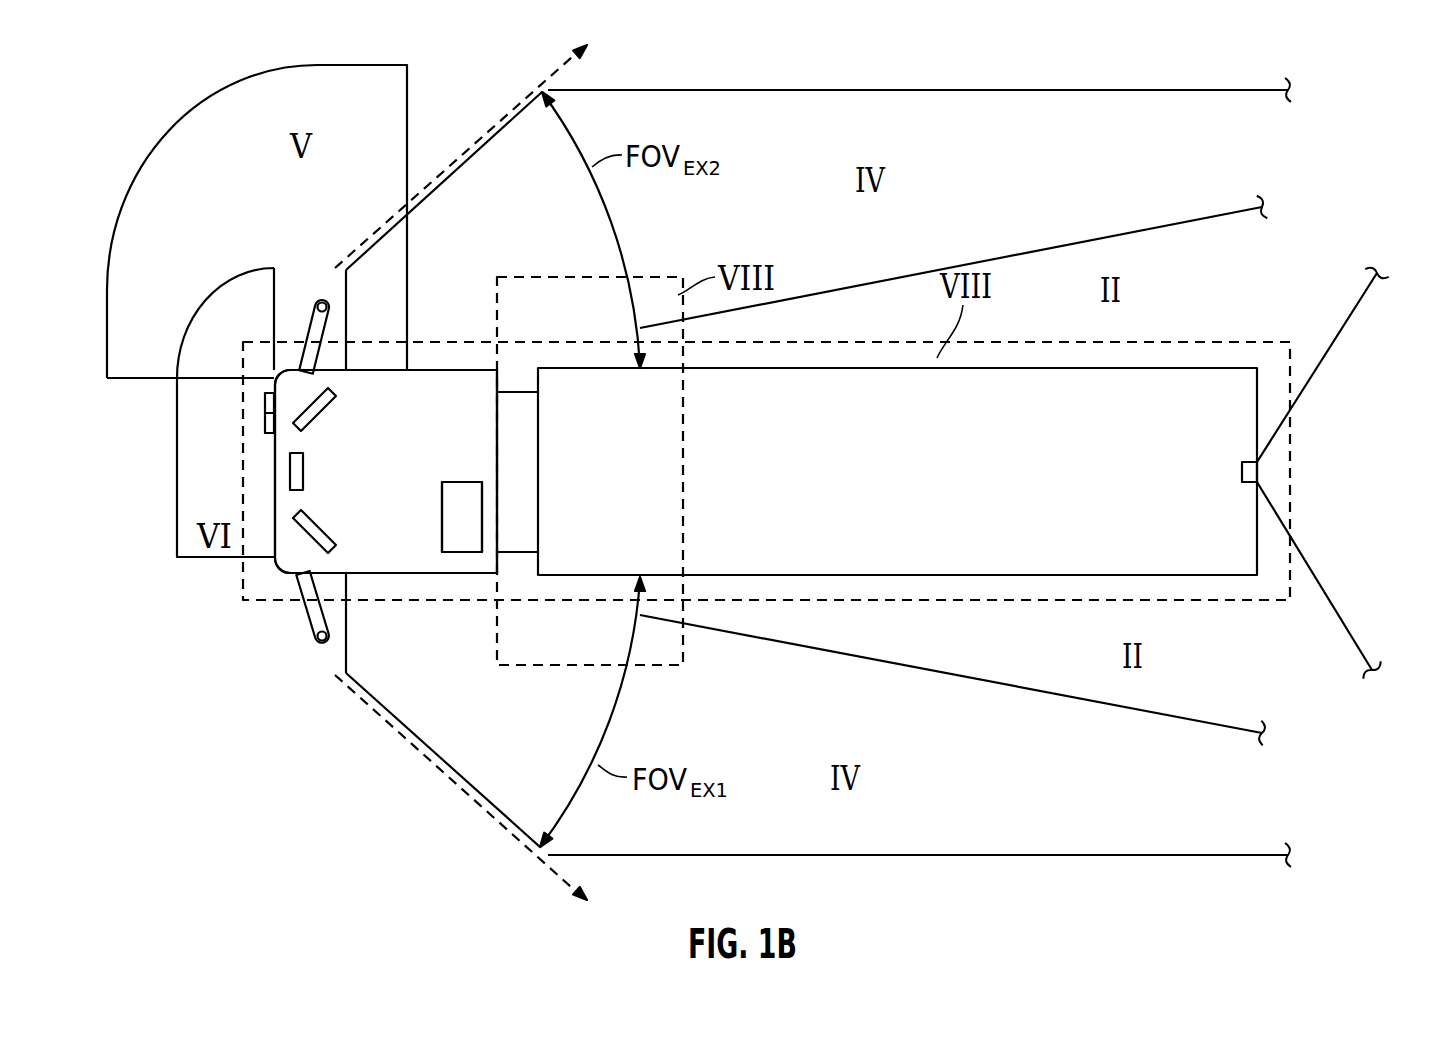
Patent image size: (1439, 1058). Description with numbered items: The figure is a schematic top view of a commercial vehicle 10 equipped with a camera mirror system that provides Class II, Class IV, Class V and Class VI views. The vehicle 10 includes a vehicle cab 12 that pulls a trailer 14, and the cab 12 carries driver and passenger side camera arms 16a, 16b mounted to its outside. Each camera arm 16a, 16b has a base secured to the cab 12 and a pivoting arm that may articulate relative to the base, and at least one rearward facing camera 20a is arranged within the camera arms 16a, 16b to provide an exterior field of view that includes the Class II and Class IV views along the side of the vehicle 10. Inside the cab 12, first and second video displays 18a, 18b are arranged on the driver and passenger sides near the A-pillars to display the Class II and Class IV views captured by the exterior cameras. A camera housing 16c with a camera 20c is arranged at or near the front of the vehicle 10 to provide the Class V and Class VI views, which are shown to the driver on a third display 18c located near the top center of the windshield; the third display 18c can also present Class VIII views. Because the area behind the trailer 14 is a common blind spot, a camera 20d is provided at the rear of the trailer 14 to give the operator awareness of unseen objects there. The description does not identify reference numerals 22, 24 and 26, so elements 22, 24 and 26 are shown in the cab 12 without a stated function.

The commercial vehicle 10 is at (262, 362).
The vehicle cab 12 is at (278, 570).
The trailer 14 is at (1163, 367).
The driver side camera arm 16a is at (308, 617).
The passenger side camera arm 16b is at (307, 317).
The camera housing 16c is at (265, 426).
The first video display 18a is at (318, 530).
The second video display 18b is at (320, 410).
The third display 18c is at (290, 473).
The rearward facing camera 20a is at (332, 628).
The camera 20c is at (265, 398).
The camera 20d is at (330, 315).
The camera module 22 is at (438, 394).
The imager 24 is at (439, 495).
The image sensor 26 is at (464, 495).